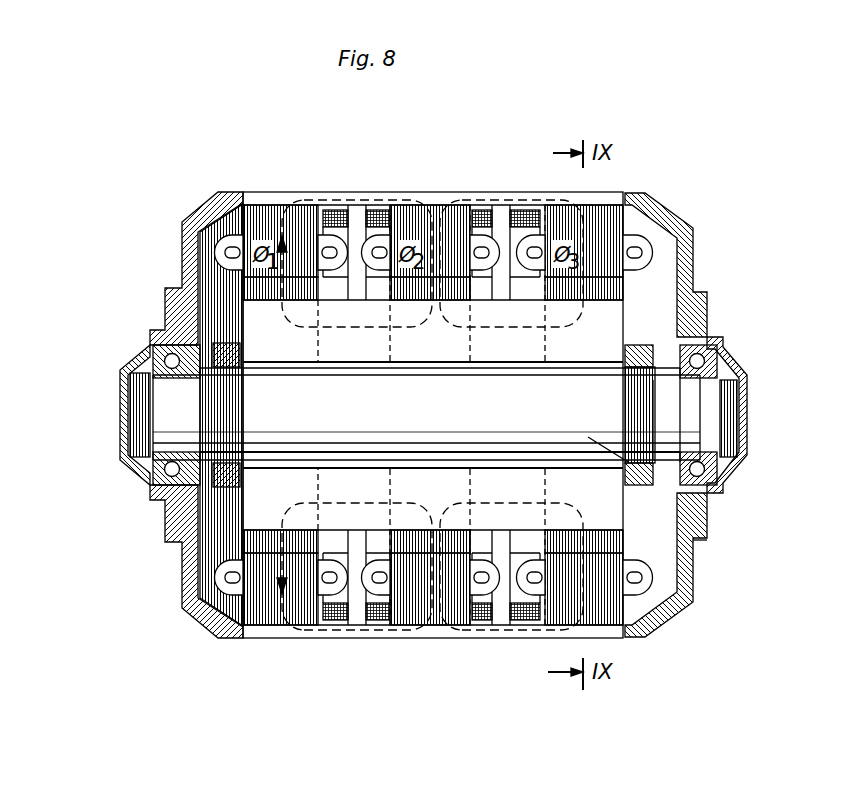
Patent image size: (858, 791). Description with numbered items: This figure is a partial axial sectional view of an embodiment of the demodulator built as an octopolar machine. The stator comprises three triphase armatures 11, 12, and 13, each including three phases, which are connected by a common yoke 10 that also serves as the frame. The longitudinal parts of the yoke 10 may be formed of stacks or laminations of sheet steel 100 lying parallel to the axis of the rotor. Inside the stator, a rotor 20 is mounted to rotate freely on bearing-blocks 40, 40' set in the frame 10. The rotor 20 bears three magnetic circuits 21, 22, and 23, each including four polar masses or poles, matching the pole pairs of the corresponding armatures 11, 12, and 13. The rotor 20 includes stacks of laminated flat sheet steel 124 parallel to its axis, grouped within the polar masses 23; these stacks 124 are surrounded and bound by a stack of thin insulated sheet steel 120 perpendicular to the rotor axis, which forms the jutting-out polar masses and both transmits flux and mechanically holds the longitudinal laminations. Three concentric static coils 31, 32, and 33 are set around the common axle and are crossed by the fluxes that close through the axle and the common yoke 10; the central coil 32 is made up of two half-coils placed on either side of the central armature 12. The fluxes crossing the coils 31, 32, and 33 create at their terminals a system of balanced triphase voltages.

The common yoke 10 is at (258, 194).
The triphase armature 11 is at (222, 213).
The central armature 12 is at (478, 286).
The triphase armature 13 is at (641, 226).
The rotor 20 is at (702, 543).
The magnetic circuit 21 is at (257, 288).
The magnetic circuit 22 is at (410, 292).
The magnetic circuit 23 is at (625, 292).
The static coil 31 is at (343, 192).
The central coil 32 is at (388, 208).
The static coil 33 is at (520, 208).
The bearing-block 40 is at (171, 461).
The bearing-block 40' is at (705, 404).
The sheet steel laminations 100 is at (620, 197).
The thin insulated sheet steel stack 120 is at (617, 293).
The laminated flat sheet steel stacks 124 is at (608, 335).